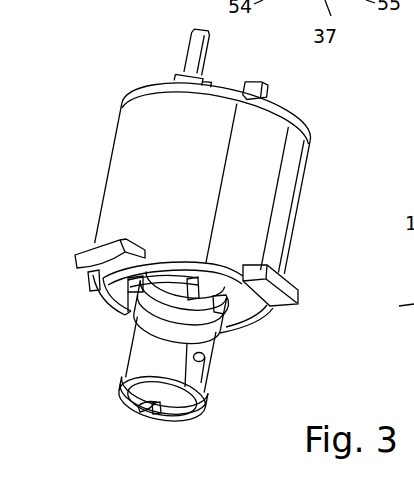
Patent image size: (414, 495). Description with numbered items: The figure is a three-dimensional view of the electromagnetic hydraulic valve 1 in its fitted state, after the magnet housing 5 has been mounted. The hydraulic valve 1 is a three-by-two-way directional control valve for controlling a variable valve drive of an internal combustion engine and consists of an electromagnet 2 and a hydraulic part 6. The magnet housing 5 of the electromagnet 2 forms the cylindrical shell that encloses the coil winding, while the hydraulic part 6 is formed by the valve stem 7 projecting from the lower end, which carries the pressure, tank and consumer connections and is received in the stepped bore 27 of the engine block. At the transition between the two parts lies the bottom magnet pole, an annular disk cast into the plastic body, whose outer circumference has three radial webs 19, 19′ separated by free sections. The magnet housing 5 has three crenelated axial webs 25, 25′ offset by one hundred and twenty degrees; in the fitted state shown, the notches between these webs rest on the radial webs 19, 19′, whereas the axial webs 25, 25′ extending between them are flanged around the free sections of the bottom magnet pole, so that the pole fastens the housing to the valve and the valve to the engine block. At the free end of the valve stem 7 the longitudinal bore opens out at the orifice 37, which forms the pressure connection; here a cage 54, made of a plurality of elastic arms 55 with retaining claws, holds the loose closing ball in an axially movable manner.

The electromagnetic hydraulic valve 1 is at (137, 82).
The electromagnet 2 is at (115, 135).
The magnet housing 5 is at (287, 182).
The hydraulic part 6 is at (213, 397).
The valve stem 7 is at (193, 380).
The radial web 19 is at (285, 302).
The radial web 19′ is at (108, 342).
The axial web 25 is at (207, 267).
The axial web 25′ is at (242, 332).
The stepped bore 27 is at (406, 309).
The orifice 37 is at (193, 422).
The cage 54 is at (140, 423).
The elastic arms 55 is at (156, 417).